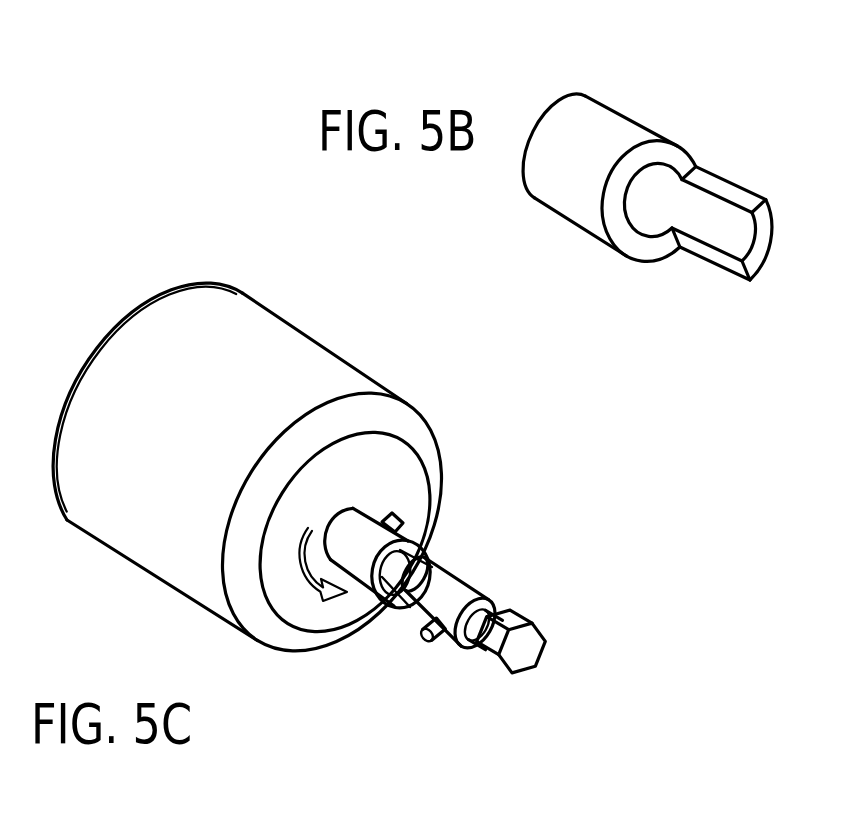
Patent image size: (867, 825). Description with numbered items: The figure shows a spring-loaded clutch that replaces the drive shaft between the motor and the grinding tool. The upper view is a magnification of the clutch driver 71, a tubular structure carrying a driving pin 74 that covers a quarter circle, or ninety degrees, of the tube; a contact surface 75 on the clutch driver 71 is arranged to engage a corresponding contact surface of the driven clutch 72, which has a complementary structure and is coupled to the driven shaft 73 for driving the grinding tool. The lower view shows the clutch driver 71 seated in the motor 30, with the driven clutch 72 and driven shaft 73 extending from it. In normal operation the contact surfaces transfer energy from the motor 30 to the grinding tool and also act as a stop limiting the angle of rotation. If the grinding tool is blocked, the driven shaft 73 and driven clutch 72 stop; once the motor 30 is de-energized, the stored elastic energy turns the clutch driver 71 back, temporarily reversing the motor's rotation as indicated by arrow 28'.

In FIG. 5C, the motor 30 is at (330, 346).
In FIG. 5B, the clutch driver 71 is at (647, 141).
In FIG. 5C, the clutch driver 71 is at (358, 522).
In FIG. 5C, the driven clutch 72 is at (460, 582).
In FIG. 5C, the driven shaft 73 is at (528, 608).
In FIG. 5B, the driving pin 74 is at (708, 208).
In FIG. 5B, the contact surface 75 is at (715, 258).
In FIG. 5C, the arrow 28' is at (321, 619).